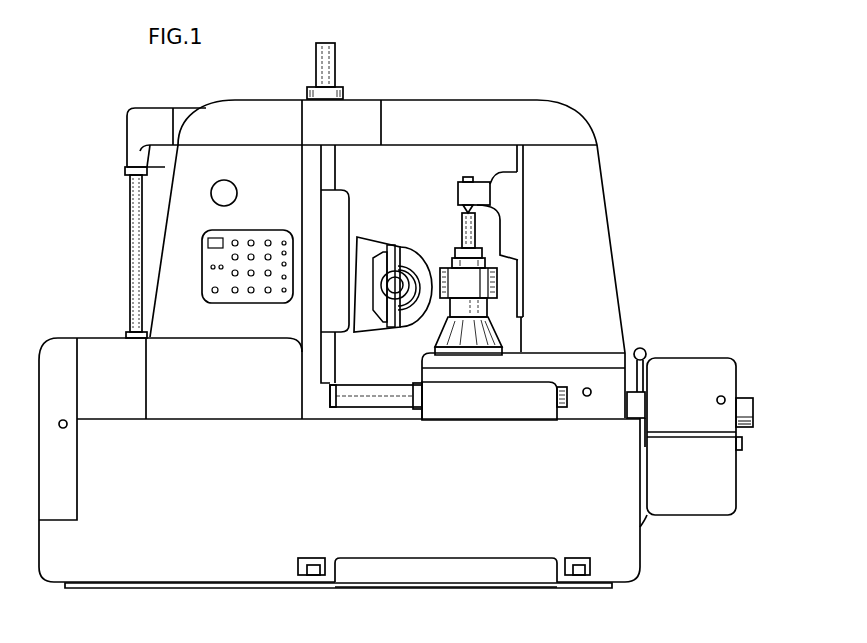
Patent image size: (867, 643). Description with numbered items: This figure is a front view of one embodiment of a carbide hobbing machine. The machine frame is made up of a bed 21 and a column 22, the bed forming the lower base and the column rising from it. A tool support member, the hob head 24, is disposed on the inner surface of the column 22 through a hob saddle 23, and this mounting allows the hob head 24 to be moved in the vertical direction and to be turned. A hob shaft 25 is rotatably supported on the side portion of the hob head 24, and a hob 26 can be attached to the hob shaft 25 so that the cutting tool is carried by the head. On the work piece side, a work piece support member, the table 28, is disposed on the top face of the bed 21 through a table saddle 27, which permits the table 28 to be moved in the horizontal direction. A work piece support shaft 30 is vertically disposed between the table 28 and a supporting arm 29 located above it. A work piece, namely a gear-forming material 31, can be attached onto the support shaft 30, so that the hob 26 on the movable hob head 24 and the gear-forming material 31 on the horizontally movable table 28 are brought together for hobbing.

The bed 21 is at (125, 573).
The column 22 is at (162, 288).
The hob saddle 23 is at (337, 200).
The hob head 24 is at (362, 237).
The hob shaft 25 is at (400, 320).
The hob 26 is at (405, 263).
The table saddle 27 is at (578, 413).
The table 28 is at (503, 353).
The supporting arm 29 is at (482, 188).
The work piece support shaft 30 is at (463, 233).
The gear-forming material 31 is at (494, 282).